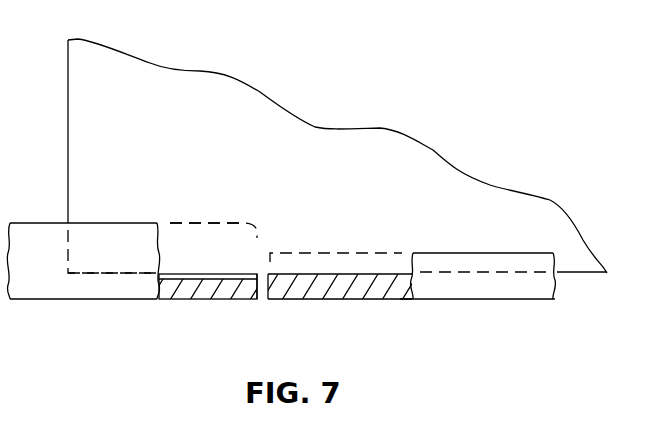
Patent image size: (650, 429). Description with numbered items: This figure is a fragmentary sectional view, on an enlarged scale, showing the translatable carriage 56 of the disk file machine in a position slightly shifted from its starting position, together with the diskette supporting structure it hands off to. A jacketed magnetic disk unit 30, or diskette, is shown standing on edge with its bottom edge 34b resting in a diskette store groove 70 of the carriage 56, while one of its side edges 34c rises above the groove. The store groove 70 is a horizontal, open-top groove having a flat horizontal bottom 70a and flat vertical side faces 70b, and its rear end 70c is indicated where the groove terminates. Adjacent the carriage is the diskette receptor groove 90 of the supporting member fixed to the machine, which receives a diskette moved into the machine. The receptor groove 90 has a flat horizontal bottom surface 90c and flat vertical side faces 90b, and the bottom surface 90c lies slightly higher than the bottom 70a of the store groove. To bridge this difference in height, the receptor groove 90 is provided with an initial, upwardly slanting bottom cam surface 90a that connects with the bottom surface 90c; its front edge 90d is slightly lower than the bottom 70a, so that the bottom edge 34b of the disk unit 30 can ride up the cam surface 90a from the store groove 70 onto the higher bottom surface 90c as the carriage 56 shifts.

The jacketed magnetic disk unit 30 is at (226, 127).
The bottom edge 34b is at (138, 275).
The side edge 34c is at (68, 122).
The carriage 56 is at (57, 300).
The diskette store groove 70 is at (229, 217).
The bottom 70a is at (222, 284).
The side face 70b is at (187, 228).
The rear end 70c is at (258, 258).
The diskette receptor groove 90 is at (350, 247).
The bottom cam surface 90a is at (270, 302).
The side face 90b is at (383, 256).
The bottom surface 90c is at (348, 277).
The front edge 90d is at (300, 278).